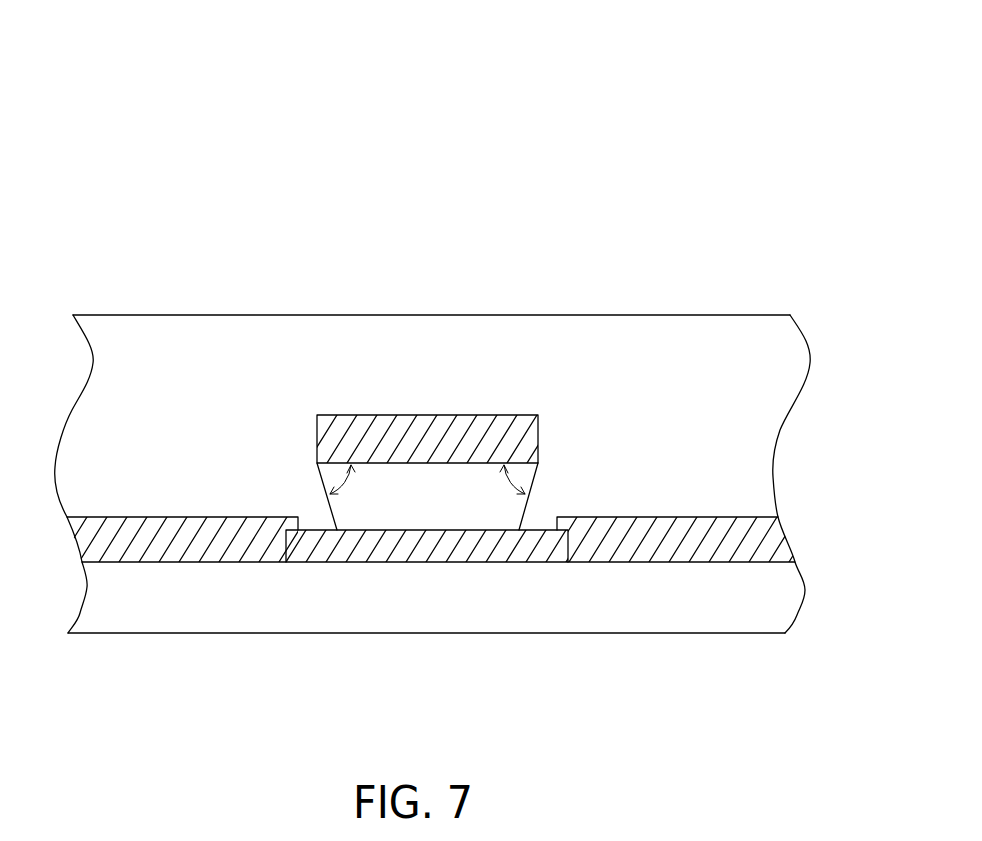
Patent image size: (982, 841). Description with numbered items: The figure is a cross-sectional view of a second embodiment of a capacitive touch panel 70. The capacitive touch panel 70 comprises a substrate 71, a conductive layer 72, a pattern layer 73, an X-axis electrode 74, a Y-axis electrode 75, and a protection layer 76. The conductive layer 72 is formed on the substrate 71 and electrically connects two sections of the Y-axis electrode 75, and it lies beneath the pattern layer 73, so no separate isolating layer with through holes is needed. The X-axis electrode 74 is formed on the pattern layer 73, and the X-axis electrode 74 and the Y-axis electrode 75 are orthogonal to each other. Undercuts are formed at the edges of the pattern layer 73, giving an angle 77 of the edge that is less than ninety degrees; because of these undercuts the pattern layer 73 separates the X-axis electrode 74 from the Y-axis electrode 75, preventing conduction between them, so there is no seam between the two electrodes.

The capacitive touch panel 70 is at (712, 125).
The substrate 71 is at (433, 622).
The conductive layer 72 is at (330, 540).
The pattern layer 73 is at (493, 512).
The X-axis electrode 74 is at (417, 438).
The Y-axis electrode 75 is at (150, 540).
The protection layer 76 is at (240, 411).
The angle 77 is at (333, 485).